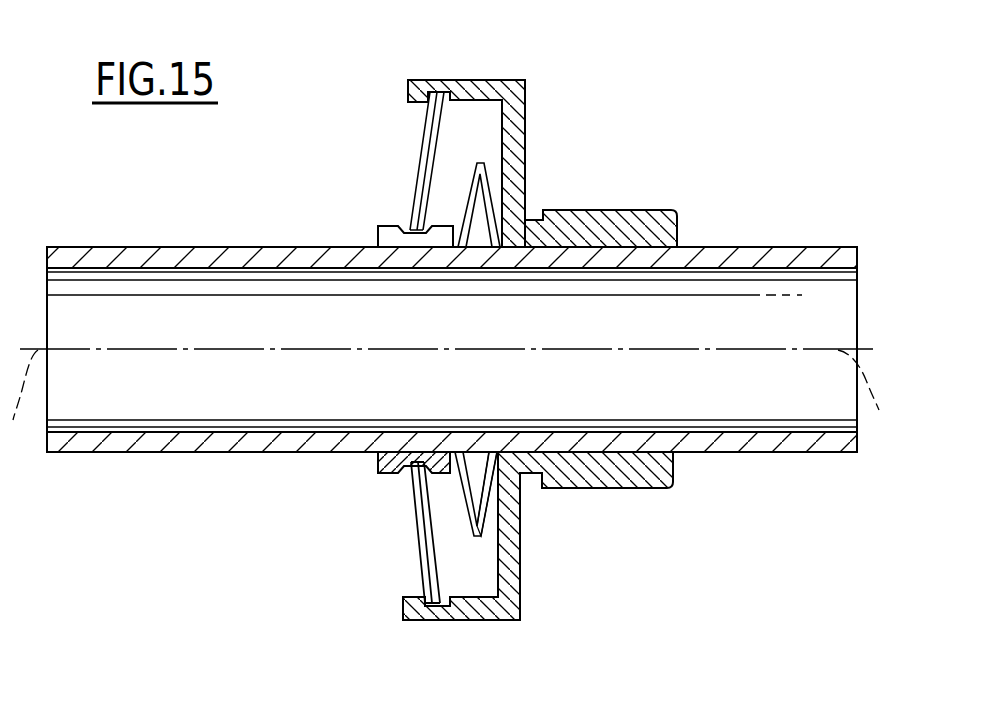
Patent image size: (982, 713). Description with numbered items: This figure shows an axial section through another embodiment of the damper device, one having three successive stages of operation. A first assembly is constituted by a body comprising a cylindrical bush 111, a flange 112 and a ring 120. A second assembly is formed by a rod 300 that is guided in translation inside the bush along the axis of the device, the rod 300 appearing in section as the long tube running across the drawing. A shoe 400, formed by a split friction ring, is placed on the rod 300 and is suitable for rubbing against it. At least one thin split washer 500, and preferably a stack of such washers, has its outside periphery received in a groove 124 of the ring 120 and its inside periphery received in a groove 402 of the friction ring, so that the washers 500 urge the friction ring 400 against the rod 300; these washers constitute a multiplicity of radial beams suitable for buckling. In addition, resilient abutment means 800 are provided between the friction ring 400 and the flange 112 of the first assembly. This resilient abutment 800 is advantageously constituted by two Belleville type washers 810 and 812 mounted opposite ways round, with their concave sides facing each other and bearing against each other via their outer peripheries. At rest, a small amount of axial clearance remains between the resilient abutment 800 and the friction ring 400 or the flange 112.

The cylindrical bush 111 is at (645, 228).
The flange 112 is at (512, 130).
The ring 120 is at (462, 92).
The groove 124 is at (418, 587).
The rod 300 is at (123, 437).
The shoe 400 is at (432, 237).
The groove 402 is at (403, 475).
The thin split washer 500 is at (404, 521).
The resilient abutment means 800 is at (490, 186).
The Belleville type washer 810 is at (470, 527).
The Belleville type washer 812 is at (493, 498).